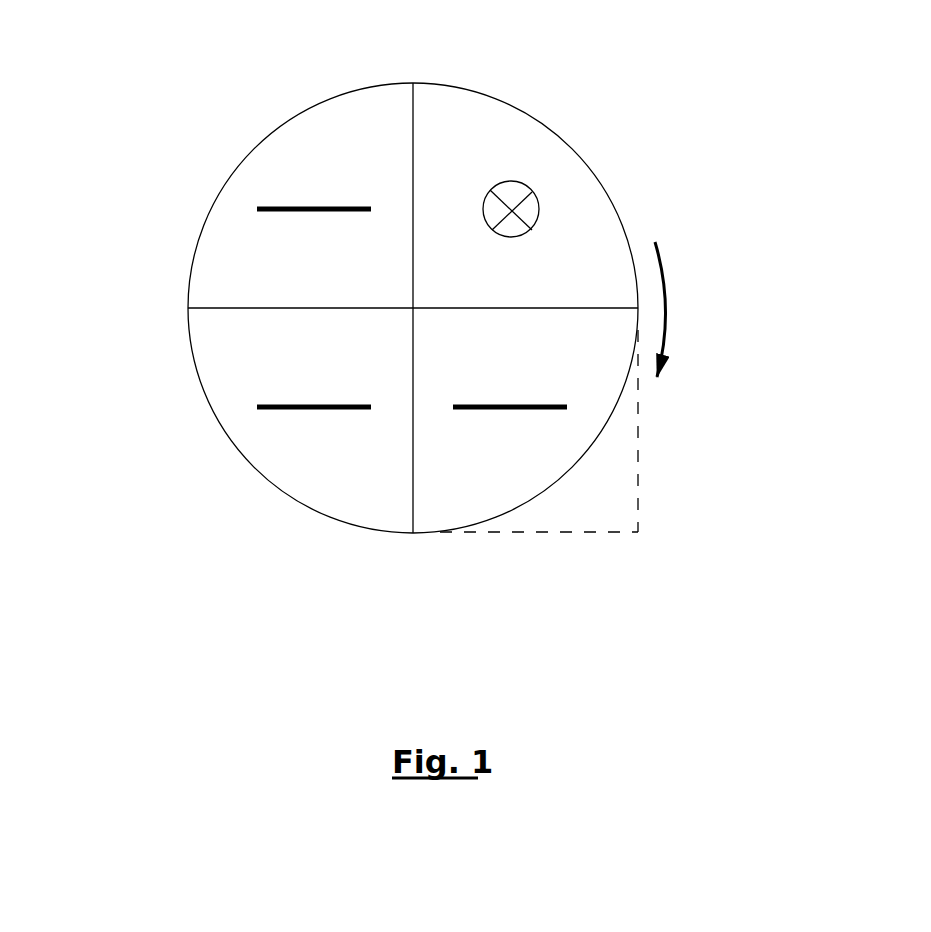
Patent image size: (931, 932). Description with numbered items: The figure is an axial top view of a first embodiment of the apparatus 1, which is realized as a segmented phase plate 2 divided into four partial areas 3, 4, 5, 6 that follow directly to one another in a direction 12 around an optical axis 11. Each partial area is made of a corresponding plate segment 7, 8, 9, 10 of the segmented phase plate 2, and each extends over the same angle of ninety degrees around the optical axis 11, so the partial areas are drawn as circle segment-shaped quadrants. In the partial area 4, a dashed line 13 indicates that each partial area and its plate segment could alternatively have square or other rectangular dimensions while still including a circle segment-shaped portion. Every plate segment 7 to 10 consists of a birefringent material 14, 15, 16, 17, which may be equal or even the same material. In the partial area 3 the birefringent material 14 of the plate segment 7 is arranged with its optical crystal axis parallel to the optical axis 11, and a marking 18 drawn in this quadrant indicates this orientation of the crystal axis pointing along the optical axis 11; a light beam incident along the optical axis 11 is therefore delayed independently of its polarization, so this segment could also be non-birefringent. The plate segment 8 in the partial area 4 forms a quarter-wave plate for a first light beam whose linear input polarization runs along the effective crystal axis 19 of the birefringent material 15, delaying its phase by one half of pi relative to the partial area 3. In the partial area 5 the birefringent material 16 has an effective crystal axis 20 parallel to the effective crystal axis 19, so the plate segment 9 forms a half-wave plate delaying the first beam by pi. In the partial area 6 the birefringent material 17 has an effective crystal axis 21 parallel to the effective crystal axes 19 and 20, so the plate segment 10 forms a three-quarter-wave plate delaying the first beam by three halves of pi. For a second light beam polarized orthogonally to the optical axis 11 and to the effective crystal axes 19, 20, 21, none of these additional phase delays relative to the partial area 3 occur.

The apparatus 1 is at (432, 310).
The segmented phase plate 2 is at (590, 162).
The partial area 3 is at (613, 195).
The partial area 4 is at (559, 445).
The partial area 5 is at (240, 425).
The partial area 6 is at (232, 185).
The plate segment 7 is at (613, 195).
The plate segment 8 is at (559, 445).
The plate segment 9 is at (240, 425).
The plate segment 10 is at (232, 185).
The optical axis 11 is at (400, 313).
The direction 12 is at (673, 308).
The dashed line 13 is at (647, 435).
The birefringent material 14 is at (625, 215).
The birefringent material 15 is at (547, 495).
The birefringent material 16 is at (227, 447).
The birefringent material 17 is at (237, 162).
The optical axis marker 18 is at (513, 175).
The effective crystal axis 19 is at (510, 412).
The effective crystal axis 20 is at (313, 412).
The effective crystal axis 21 is at (308, 216).